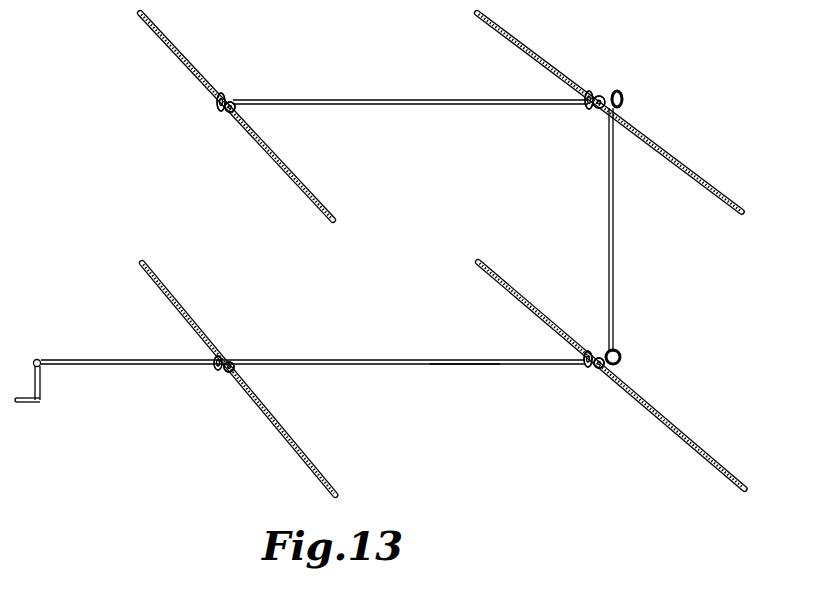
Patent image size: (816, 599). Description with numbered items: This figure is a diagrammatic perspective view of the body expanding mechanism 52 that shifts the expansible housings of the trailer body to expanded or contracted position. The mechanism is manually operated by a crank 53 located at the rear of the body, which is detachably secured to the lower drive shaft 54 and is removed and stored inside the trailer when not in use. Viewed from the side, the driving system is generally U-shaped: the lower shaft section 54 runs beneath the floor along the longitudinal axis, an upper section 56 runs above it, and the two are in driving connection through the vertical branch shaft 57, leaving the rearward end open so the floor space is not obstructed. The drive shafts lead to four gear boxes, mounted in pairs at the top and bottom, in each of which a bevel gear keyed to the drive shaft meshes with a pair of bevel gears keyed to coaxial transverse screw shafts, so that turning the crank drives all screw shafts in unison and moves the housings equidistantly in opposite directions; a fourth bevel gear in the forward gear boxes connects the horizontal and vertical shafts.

The body expanding mechanism 52 is at (381, 358).
The crank 53 is at (44, 388).
The drive shaft 54 is at (460, 365).
The upper section 56 is at (459, 99).
The vertical branch shaft 57 is at (608, 216).